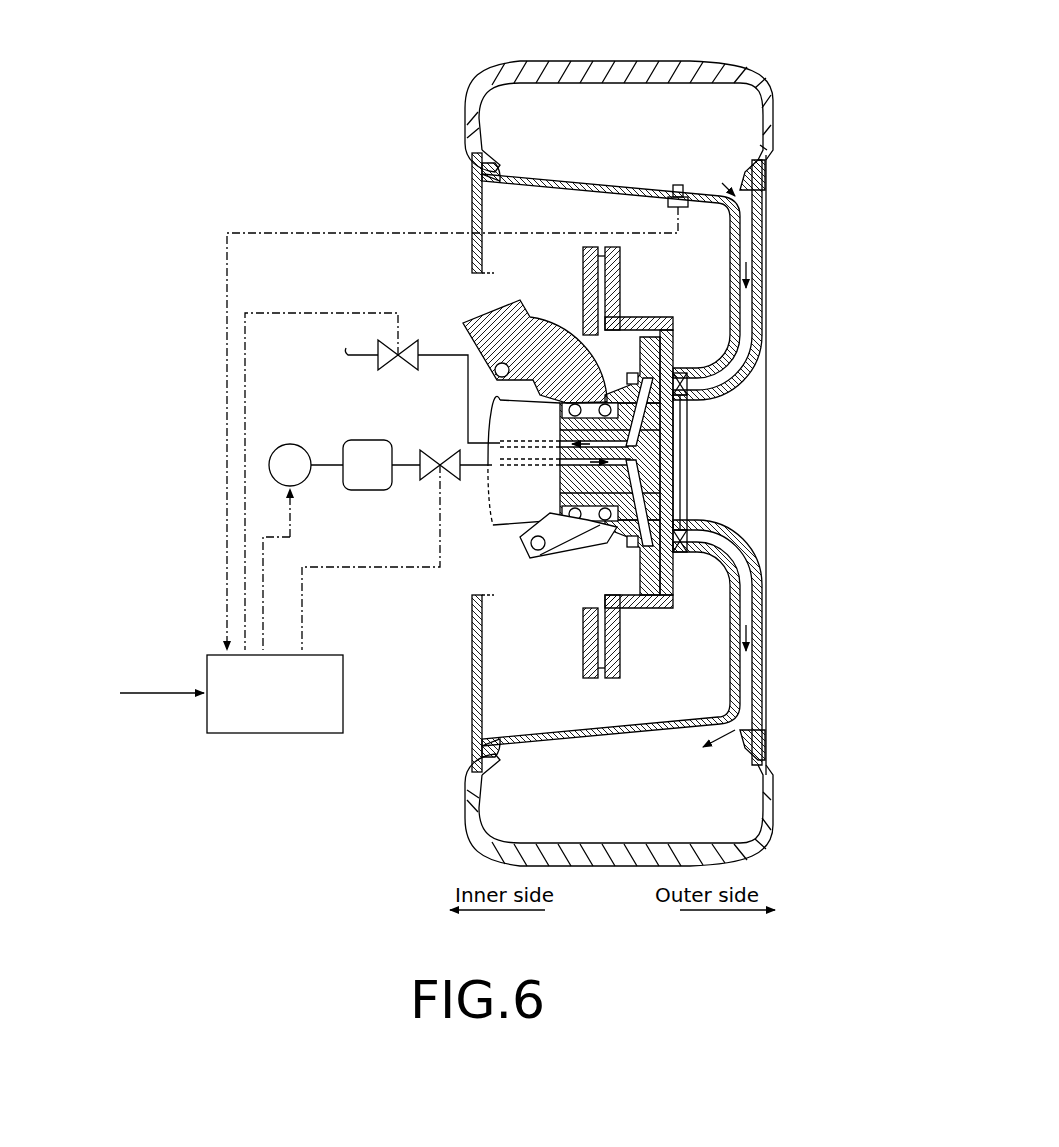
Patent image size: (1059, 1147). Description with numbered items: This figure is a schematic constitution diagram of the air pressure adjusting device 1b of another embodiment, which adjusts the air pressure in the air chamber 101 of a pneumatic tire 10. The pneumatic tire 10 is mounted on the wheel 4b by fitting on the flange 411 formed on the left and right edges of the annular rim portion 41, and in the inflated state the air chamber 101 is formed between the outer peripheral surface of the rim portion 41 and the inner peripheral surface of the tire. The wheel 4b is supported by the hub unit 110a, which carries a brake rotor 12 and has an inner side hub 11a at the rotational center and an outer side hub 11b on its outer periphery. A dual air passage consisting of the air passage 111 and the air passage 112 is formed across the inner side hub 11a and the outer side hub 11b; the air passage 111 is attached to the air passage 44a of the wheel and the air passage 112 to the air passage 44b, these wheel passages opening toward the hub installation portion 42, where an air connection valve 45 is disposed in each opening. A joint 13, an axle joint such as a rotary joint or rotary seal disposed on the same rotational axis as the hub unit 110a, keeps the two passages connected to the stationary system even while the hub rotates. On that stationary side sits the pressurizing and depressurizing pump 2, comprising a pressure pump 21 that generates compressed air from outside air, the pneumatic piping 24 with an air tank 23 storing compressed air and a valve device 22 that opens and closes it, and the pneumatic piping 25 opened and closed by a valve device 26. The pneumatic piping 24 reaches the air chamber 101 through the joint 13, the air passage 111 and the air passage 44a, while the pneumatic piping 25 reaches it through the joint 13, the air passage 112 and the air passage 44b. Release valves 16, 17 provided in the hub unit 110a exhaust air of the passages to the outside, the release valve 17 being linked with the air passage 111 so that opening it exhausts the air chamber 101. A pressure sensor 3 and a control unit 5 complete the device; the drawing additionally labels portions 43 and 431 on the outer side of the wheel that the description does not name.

The air pressure adjusting device 1b is at (368, 170).
The pneumatic tire 10 is at (735, 72).
The air chamber 101 is at (680, 78).
The flange 411 is at (473, 170).
The rim portion 41 is at (604, 186).
The hub installation portion 42 is at (678, 364).
The air passage 44b is at (742, 348).
The air passage 44a is at (745, 582).
The wheel 4b is at (782, 211).
The outer surface of spacer 431 is at (767, 263).
The spacer member 43 is at (765, 286).
The air connection valve 45 is at (690, 394).
The pressure sensor 3 is at (678, 185).
The brake rotor 12 is at (578, 288).
The hub unit 110a is at (708, 436).
The air passage 112 is at (690, 446).
The inner side hub 11a is at (676, 466).
The air passage 111 is at (690, 490).
The outer side hub 11b is at (682, 508).
The release valve 16 is at (628, 378).
The release valve 17 is at (628, 544).
The joint 13 is at (493, 512).
The pressurizing and depressurizing pump 2 is at (283, 404).
The pressure pump 21 is at (293, 444).
The pneumatic piping 24 is at (330, 462).
The air tank 23 is at (368, 440).
The valve device 22 is at (440, 450).
The pneumatic piping 25 is at (468, 408).
The valve device 26 is at (400, 340).
The control unit 5 is at (205, 655).